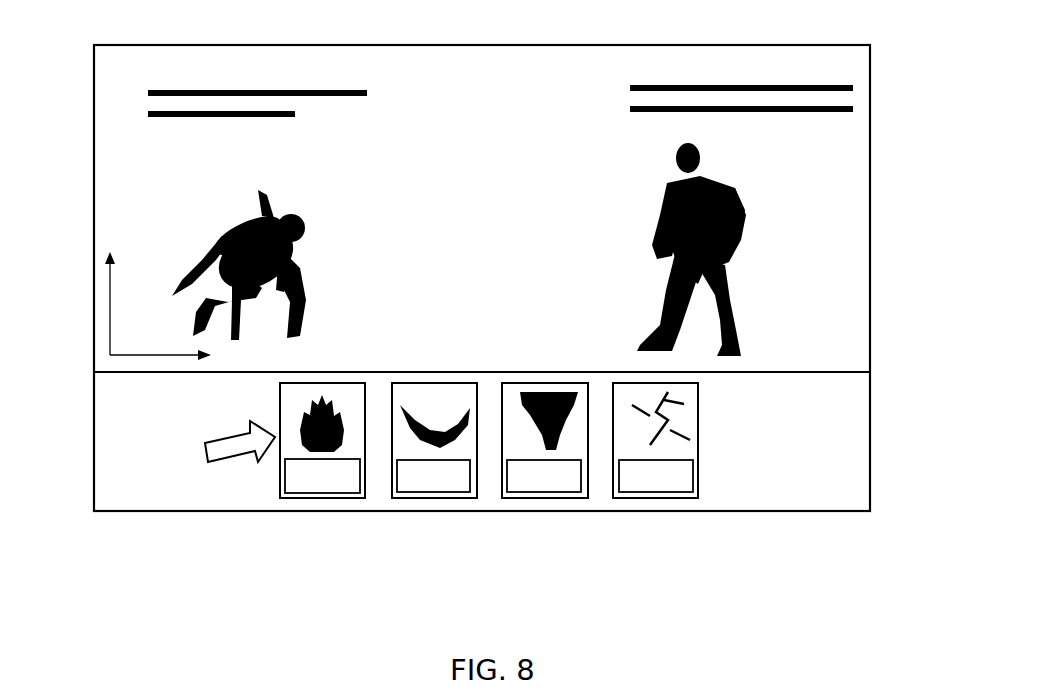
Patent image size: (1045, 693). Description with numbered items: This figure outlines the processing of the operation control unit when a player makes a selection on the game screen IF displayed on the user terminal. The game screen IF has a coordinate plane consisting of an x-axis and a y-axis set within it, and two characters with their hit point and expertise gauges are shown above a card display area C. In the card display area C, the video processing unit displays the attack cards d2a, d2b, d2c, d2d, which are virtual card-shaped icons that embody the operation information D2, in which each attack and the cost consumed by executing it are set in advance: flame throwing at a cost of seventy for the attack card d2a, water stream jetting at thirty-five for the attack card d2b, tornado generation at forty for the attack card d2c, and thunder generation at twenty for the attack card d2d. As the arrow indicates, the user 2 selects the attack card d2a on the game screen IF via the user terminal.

The game screen IF is at (874, 203).
The card display area C is at (113, 450).
The user 2 is at (200, 453).
The operation information D2 is at (548, 486).
The attack card d2a is at (320, 498).
The attack card d2b is at (437, 498).
The attack card d2c is at (547, 498).
The attack card d2d is at (660, 498).